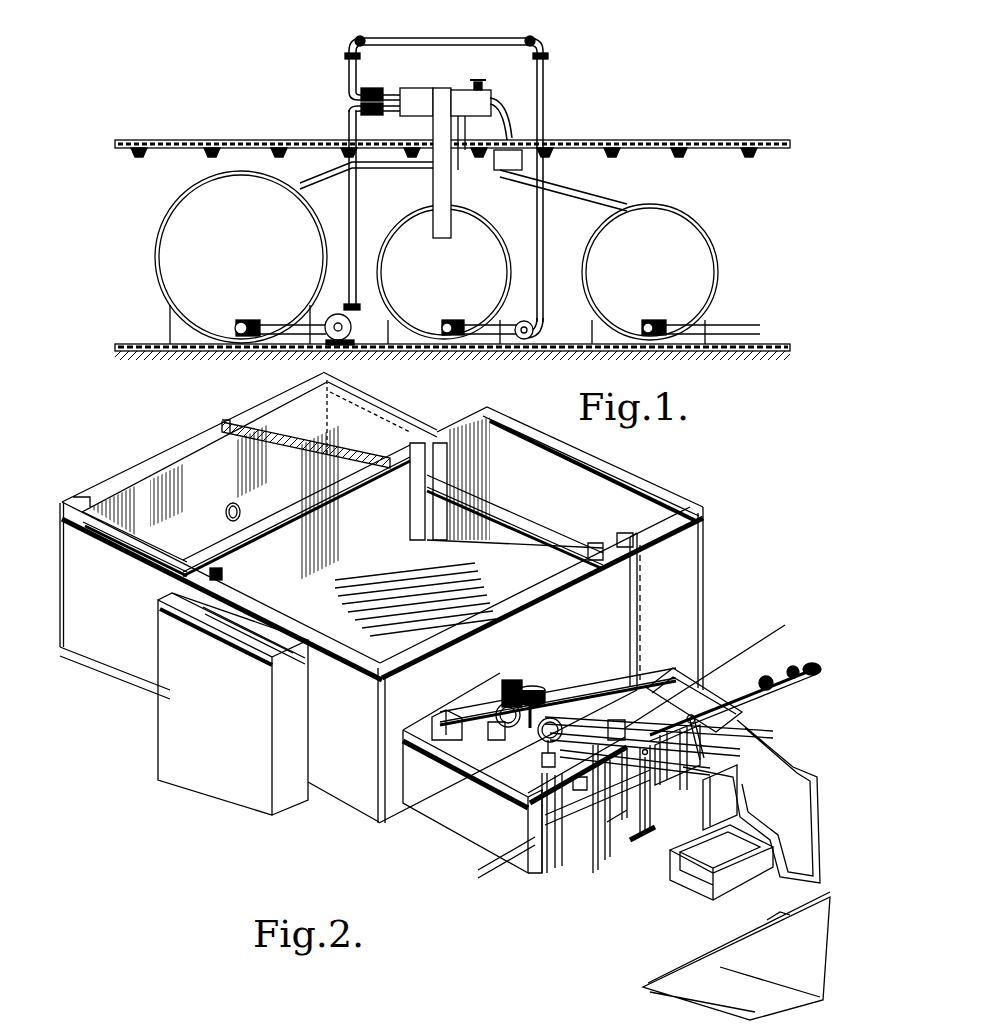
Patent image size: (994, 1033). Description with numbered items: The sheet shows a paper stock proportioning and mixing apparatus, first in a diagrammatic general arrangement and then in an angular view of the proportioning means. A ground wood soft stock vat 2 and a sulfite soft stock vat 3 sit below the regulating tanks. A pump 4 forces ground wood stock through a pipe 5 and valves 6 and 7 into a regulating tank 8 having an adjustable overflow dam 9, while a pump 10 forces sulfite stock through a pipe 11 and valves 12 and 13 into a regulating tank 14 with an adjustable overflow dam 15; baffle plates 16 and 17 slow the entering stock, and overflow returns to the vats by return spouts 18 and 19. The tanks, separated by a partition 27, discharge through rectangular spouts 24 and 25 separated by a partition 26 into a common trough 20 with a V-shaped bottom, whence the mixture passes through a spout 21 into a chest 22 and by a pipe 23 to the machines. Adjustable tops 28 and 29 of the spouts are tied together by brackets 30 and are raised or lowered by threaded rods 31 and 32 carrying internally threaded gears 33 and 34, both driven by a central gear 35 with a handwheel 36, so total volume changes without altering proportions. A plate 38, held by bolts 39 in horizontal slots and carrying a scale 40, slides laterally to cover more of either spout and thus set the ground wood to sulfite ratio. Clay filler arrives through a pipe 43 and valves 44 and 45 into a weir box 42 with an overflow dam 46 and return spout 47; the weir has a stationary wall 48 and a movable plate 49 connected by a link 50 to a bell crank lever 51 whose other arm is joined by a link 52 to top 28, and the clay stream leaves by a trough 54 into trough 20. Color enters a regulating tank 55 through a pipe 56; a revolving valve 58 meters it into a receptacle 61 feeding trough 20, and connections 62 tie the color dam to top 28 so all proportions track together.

In FIG. 1, the ground wood soft stock vat 2 is at (163, 264).
In FIG. 1, the sulfite soft stock vat 3 is at (410, 238).
In FIG. 1, the pump 4 is at (332, 314).
In FIG. 1, the pipe 5 is at (350, 207).
In FIG. 1, the valve 6 is at (350, 113).
In FIG. 1, the valve 7 is at (372, 112).
In FIG. 1, the regulating tank 8 is at (416, 102).
In FIG. 2, the regulating tank 8 is at (515, 583).
In FIG. 2, the adjustable overflow dam 9 is at (505, 515).
In FIG. 1, the pump 10 is at (540, 328).
In FIG. 1, the pipe 11 is at (538, 227).
In FIG. 1, the valve 12 is at (348, 96).
In FIG. 1, the valve 13 is at (372, 88).
In FIG. 2, the regulating tank 14 is at (406, 640).
In FIG. 2, the adjustable overflow dam 15 is at (240, 620).
In FIG. 2, the baffle plate 16 is at (290, 498).
In FIG. 2, the baffle plate 17 is at (187, 550).
In FIG. 1, the return spout 18 is at (386, 170).
In FIG. 2, the return spout 18 is at (621, 496).
In FIG. 1, the return spout 19 is at (452, 189).
In FIG. 2, the return spout 19 is at (176, 742).
In FIG. 1, the common trough 20 is at (545, 122).
In FIG. 2, the common trough 20 is at (688, 990).
In FIG. 1, the spout 21 is at (596, 194).
In FIG. 1, the storage reservoir or chest 22 is at (705, 258).
In FIG. 1, the pipe 23 is at (742, 325).
In FIG. 2, the spout 24 is at (606, 862).
In FIG. 1, the spout 25 is at (476, 104).
In FIG. 2, the spout 25 is at (556, 870).
In FIG. 2, the partition 26 is at (500, 770).
In FIG. 2, the partition 27 is at (352, 596).
In FIG. 2, the adjustable top 28 is at (594, 832).
In FIG. 2, the adjustable top 29 is at (512, 838).
In FIG. 2, the brackets 30 is at (450, 745).
In FIG. 2, the threaded rod 31 is at (560, 753).
In FIG. 2, the threaded rod 32 is at (492, 715).
In FIG. 2, the gear 33 is at (560, 720).
In FIG. 2, the gear 34 is at (504, 688).
In FIG. 2, the gear 35 is at (545, 698).
In FIG. 2, the handwheel 36 is at (536, 680).
In FIG. 2, the plate 38 is at (546, 875).
In FIG. 2, the bolts 39 is at (540, 856).
In FIG. 2, the scale 40 is at (581, 777).
In FIG. 2, the weir box 42 is at (638, 690).
In FIG. 2, the pipe 43 is at (742, 686).
In FIG. 2, the valve 44 is at (793, 686).
In FIG. 2, the valve 45 is at (820, 672).
In FIG. 2, the adjustable overflow dam 46 is at (688, 668).
In FIG. 2, the spout 47 is at (688, 680).
In FIG. 2, the stationary side or wall 48 is at (717, 712).
In FIG. 2, the movable plate 49 is at (773, 731).
In FIG. 2, the link 50 is at (742, 750).
In FIG. 2, the bell crank lever 51 is at (709, 668).
In FIG. 2, the link 52 is at (677, 755).
In FIG. 2, the trough or spout 54 is at (808, 812).
In FIG. 2, the regulating tank 55 is at (710, 768).
In FIG. 2, the pipe 56 is at (648, 838).
In FIG. 2, the revolving valve 58 is at (742, 812).
In FIG. 2, the receptacle 61 is at (705, 882).
In FIG. 2, the connections 62 is at (622, 824).